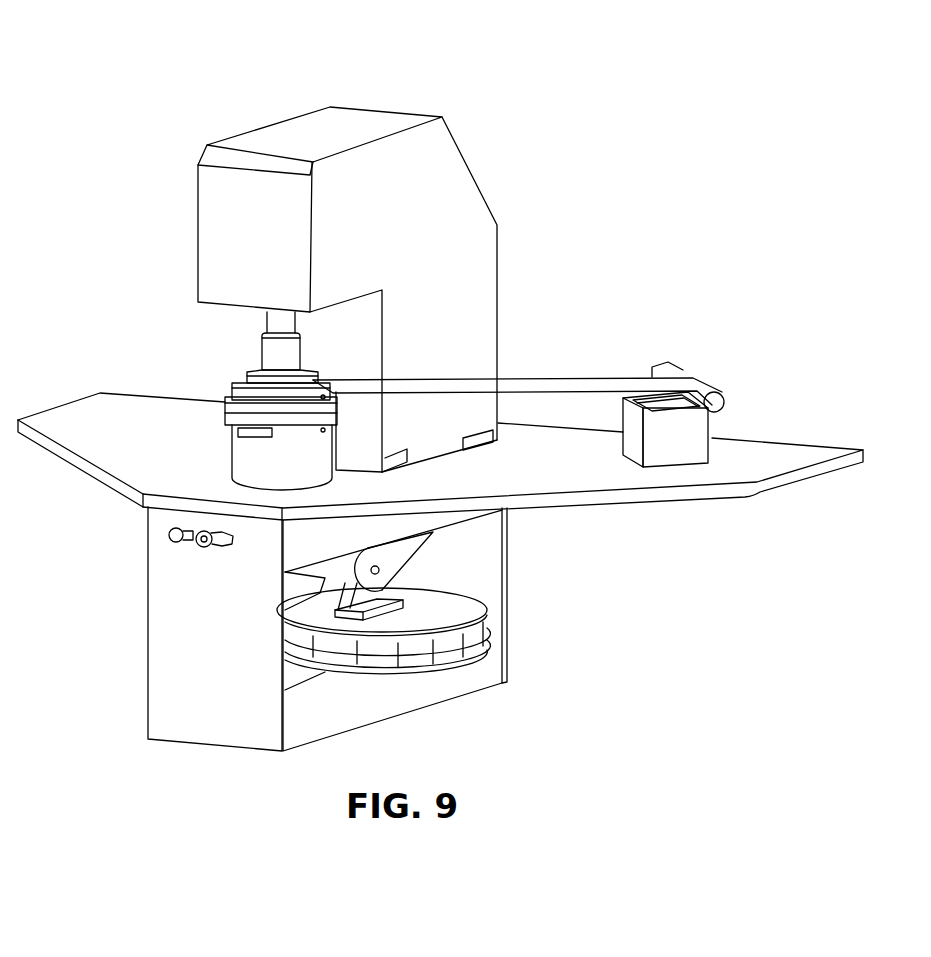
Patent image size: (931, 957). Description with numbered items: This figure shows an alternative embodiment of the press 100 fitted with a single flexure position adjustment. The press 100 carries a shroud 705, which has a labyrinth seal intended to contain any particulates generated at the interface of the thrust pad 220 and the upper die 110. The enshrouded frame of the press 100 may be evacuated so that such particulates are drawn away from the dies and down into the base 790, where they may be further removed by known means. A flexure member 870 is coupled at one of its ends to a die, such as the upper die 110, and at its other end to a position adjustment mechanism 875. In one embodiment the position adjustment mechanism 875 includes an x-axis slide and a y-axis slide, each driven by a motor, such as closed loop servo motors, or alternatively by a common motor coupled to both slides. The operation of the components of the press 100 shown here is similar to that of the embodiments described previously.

The press 100 is at (294, 64).
The shroud 705 is at (472, 170).
The thrust pad 220 is at (313, 408).
The upper die 110 is at (228, 406).
The flexure member 870 is at (563, 377).
The position adjustment mechanism 875 is at (681, 335).
The base 790 is at (478, 570).